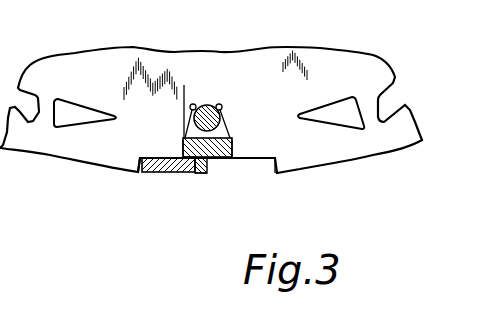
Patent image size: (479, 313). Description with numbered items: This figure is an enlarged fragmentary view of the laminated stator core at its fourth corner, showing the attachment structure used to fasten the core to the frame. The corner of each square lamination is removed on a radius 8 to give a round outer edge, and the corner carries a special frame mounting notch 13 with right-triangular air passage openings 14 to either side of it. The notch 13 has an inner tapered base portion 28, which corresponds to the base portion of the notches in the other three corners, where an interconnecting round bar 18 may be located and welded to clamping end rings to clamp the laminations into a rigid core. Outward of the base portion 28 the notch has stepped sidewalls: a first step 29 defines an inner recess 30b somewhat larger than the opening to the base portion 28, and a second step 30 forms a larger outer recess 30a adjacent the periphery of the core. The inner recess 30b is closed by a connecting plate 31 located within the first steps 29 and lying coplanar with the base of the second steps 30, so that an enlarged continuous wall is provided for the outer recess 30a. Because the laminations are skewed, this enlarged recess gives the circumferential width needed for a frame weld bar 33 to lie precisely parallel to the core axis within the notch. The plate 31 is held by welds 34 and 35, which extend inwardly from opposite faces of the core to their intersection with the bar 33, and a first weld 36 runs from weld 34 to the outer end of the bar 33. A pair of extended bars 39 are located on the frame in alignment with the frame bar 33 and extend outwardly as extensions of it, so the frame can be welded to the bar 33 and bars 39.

The radius 8 is at (363, 158).
The frame mounting notch 13 is at (139, 177).
The air passage openings 14 is at (110, 80).
The interconnecting round bar 18 is at (209, 104).
The inner base portion 28 is at (224, 115).
The first step 29 is at (182, 147).
The second step 30 is at (263, 160).
The outer recess 30a is at (231, 158).
The inner recess 30b is at (184, 85).
The connecting plate 31 is at (207, 173).
The frame weld bar 33 is at (158, 173).
The weld 34 is at (231, 158).
The weld 35 is at (183, 155).
The first weld 36 is at (198, 173).
The extended bars 39 is at (243, 157).